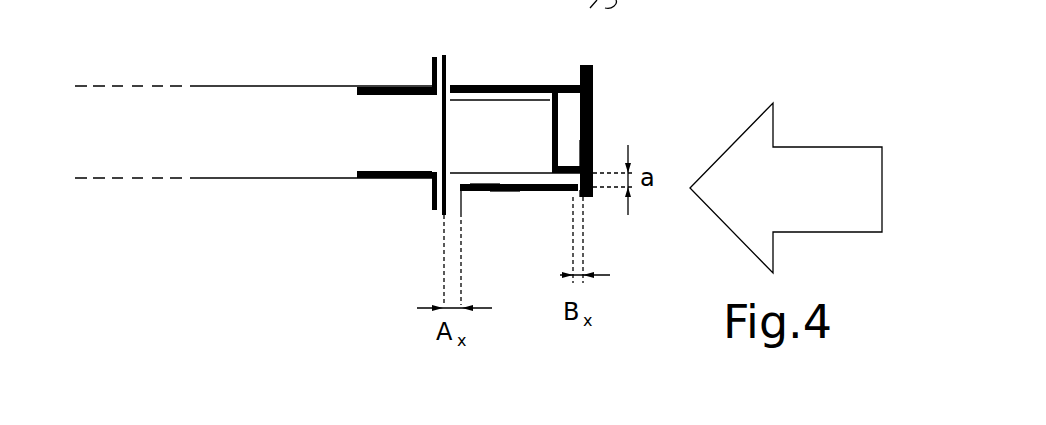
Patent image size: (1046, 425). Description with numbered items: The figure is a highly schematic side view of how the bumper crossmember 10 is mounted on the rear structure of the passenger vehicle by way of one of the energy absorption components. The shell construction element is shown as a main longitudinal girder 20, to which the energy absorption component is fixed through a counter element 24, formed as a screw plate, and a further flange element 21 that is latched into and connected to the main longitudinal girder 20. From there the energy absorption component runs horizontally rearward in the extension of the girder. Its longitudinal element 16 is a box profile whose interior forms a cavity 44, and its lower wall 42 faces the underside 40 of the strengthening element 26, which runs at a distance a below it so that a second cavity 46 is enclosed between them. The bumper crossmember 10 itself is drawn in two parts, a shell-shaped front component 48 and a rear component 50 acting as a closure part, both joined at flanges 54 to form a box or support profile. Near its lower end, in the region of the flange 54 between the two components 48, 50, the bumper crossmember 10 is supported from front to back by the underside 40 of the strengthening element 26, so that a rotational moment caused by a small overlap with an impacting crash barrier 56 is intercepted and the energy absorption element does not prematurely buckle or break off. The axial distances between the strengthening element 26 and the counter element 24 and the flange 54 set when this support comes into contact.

The bumper crossmember 10 is at (585, 107).
The longitudinal element 16 is at (552, 86).
The main longitudinal girder 20 is at (305, 86).
The flange element 21 is at (375, 180).
The counter element 24 is at (447, 72).
The strengthening element 26 is at (503, 195).
The underside 40 is at (433, 248).
The lower wall 42 is at (515, 192).
The cavity 44 is at (513, 142).
The cavity 46 is at (483, 184).
The front component 48 is at (568, 120).
The rear component 50 is at (590, 156).
The flange 54 is at (593, 196).
The crash barrier 56 is at (813, 160).